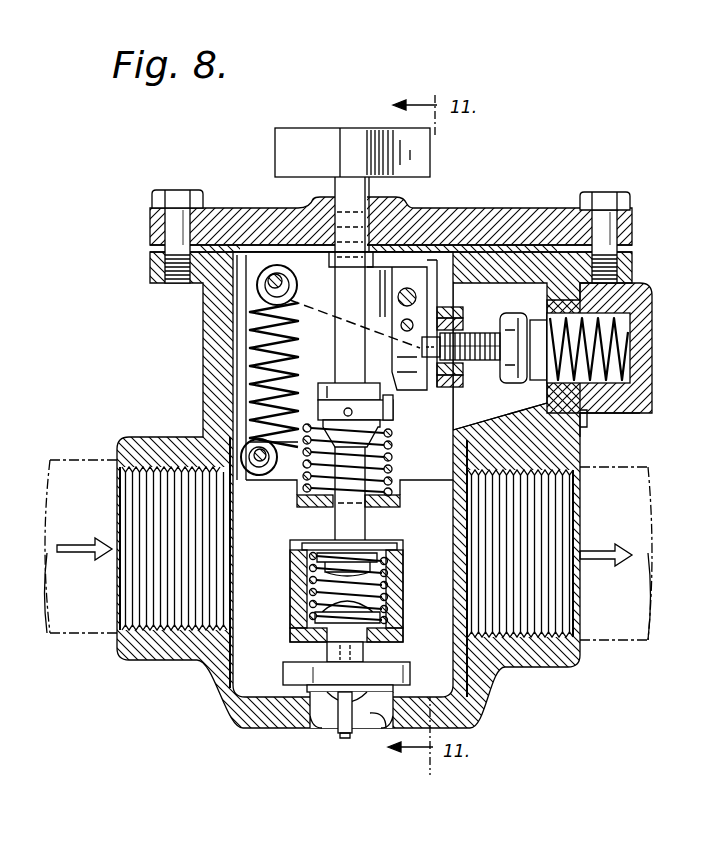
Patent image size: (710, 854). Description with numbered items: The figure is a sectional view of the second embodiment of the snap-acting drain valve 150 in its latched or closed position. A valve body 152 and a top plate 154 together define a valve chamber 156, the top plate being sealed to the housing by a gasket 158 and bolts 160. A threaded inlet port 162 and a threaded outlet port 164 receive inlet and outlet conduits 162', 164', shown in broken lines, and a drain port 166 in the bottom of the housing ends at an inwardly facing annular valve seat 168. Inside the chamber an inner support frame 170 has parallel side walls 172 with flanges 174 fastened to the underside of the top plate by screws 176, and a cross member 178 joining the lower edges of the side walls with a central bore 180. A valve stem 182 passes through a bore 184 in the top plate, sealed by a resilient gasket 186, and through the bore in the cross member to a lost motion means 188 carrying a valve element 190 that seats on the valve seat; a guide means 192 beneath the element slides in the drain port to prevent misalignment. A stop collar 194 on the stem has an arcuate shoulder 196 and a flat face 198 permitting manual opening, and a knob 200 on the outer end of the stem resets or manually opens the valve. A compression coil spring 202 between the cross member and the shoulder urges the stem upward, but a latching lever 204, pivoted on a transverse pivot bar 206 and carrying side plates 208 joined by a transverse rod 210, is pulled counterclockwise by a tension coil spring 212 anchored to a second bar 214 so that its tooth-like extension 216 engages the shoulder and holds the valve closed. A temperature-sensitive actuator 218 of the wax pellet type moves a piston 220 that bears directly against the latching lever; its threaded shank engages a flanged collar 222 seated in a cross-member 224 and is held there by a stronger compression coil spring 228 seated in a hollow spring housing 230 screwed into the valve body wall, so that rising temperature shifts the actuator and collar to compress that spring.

The valve 150 is at (573, 434).
The valve body 152 is at (200, 355).
The top plate 154 is at (548, 207).
The valve chamber 156 is at (540, 256).
The gasket 158 is at (150, 249).
The bolts 160 is at (180, 190).
The threaded inlet port 162 is at (175, 573).
The inlet conduit 162' is at (82, 571).
The threaded outlet port 164 is at (527, 570).
The outlet conduit 164' is at (620, 578).
The drain port 166 is at (372, 722).
The valve seat 168 is at (300, 687).
The inner support frame 170 is at (458, 512).
The side walls 172 is at (245, 428).
The flanges 174 is at (303, 259).
The screws 176 is at (262, 254).
The cross member 178 is at (297, 512).
The central bore 180 is at (362, 503).
The valve stem 182 is at (345, 295).
The bore 184 is at (348, 176).
The resilient gasket 186 is at (330, 220).
The lost motion means 188 is at (397, 573).
The valve element 190 is at (297, 665).
The guide means 192 is at (343, 737).
The stop collar 194 is at (335, 383).
The arcuate shoulder 196 is at (390, 424).
The flat face 198 is at (298, 400).
The knob 200 is at (352, 128).
The compression coil spring 202 is at (394, 473).
The latching lever 204 is at (447, 292).
The transverse pivot bar 206 is at (412, 288).
The side plates 208 is at (272, 293).
The transverse rod 210 is at (268, 284).
The tension coil spring 212 is at (232, 325).
The second bar 214 is at (260, 476).
The tooth-like extension 216 is at (392, 400).
The temperature-sensitive actuator 218 is at (494, 380).
The piston 220 is at (447, 385).
The flanged collar 222 is at (486, 318).
The cross-member 224 is at (456, 309).
The compression coil spring 228 is at (622, 322).
The hollow spring housing 230 is at (652, 352).